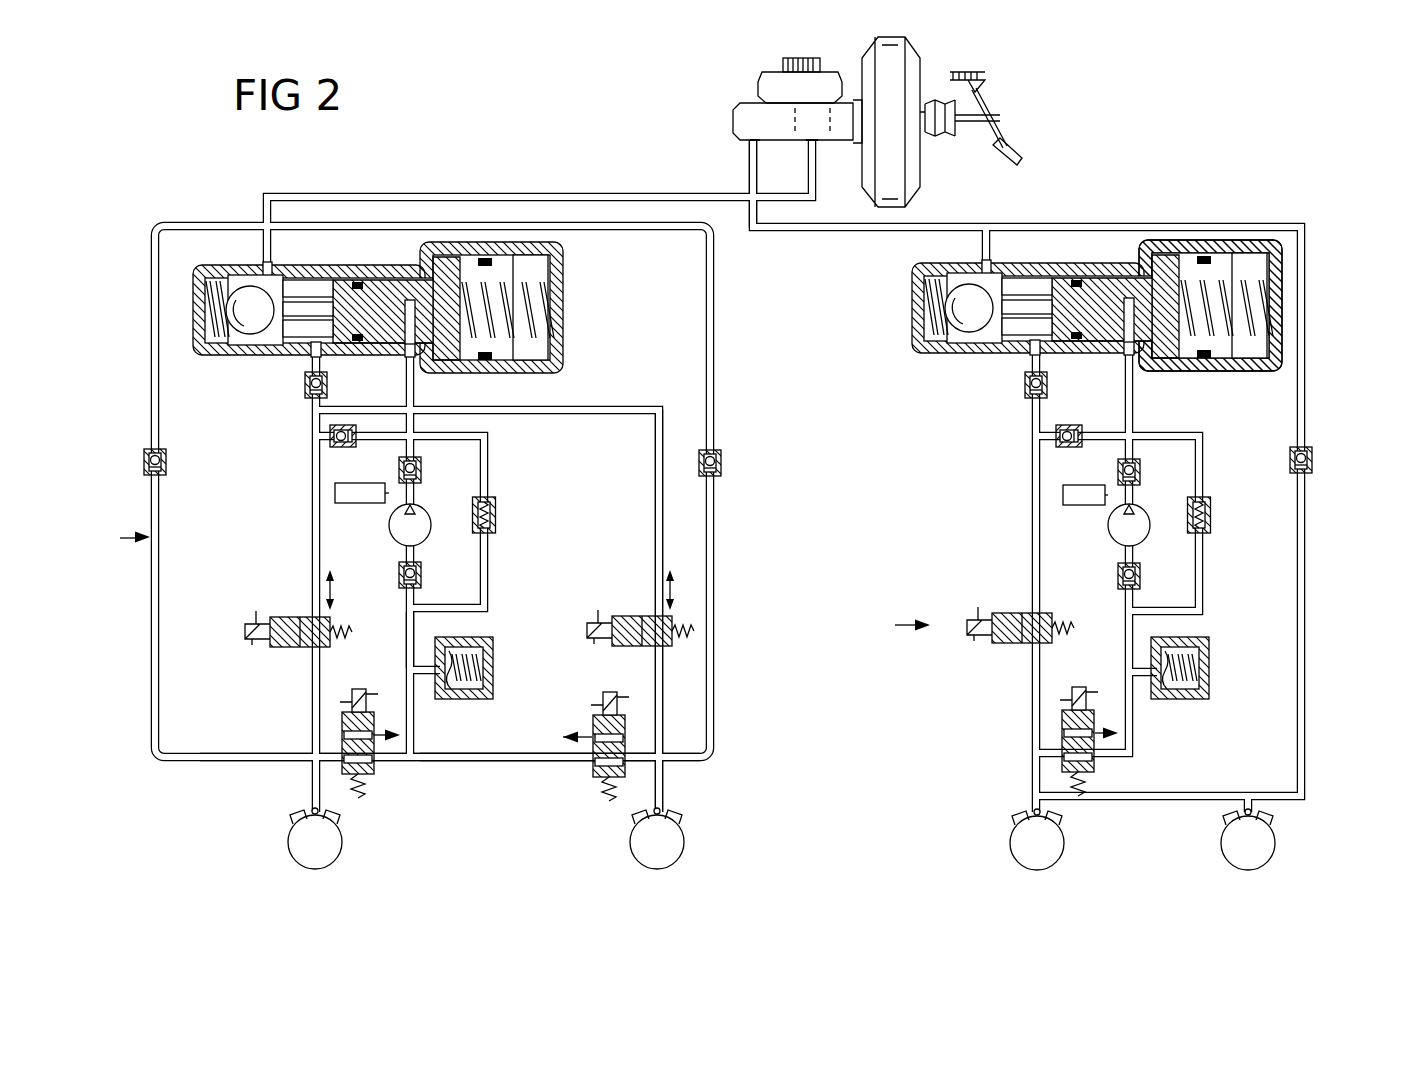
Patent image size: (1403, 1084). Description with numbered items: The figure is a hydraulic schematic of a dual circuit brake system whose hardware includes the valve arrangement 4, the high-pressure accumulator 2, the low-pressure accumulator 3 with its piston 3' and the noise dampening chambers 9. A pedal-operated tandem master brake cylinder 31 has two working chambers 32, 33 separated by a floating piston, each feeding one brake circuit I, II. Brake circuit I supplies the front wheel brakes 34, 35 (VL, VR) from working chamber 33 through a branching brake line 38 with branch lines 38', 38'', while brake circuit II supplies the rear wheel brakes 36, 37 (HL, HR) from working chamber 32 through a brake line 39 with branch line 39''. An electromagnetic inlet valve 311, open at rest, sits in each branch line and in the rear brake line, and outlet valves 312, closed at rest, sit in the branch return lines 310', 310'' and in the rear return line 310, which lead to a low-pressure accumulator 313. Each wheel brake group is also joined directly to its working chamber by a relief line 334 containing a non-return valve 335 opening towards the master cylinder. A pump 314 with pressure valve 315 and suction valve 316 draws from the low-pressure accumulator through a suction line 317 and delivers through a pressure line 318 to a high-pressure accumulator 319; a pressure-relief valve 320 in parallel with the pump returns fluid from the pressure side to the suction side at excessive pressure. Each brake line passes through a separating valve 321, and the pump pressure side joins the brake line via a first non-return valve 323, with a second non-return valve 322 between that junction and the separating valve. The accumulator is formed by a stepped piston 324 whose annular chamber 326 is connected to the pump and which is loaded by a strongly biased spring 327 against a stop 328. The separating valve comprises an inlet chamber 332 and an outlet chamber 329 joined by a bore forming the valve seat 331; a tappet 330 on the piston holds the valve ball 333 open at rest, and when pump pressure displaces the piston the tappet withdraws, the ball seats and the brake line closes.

The high-pressure accumulator 2 is at (572, 347).
The low-pressure accumulator 3 is at (495, 658).
The piston of the low-pressure accumulator 3' is at (494, 634).
The valve arrangement 4 is at (127, 533).
The noise dampening chamber 9 is at (335, 493).
The tandem master brake cylinder 31 is at (727, 95).
The working chamber 32 is at (767, 128).
The working chamber 33 is at (828, 128).
The front left wheel brake 34 is at (343, 840).
The front right wheel brake 35 is at (684, 840).
The rear left wheel brake 36 is at (1065, 840).
The rear right wheel brake 37 is at (1276, 840).
The brake line 38 is at (510, 202).
The branch line 38' is at (284, 578).
The branch line 38'' is at (622, 611).
The brake line 39 is at (1027, 468).
The branch line 39'' is at (1201, 821).
The brake circuit I is at (808, 186).
The brake circuit II is at (748, 183).
The return line 310 is at (455, 551).
The branch return line 310' is at (450, 774).
The branch return line 310'' is at (537, 741).
The inlet valve 311 is at (275, 648).
The outlet valve 312 is at (342, 735).
The low-pressure accumulator 313 is at (485, 672).
The pump 314 is at (389, 525).
The pressure valve 315 is at (424, 470).
The suction valve 316 is at (424, 575).
The suction line 317 is at (407, 625).
The pressure line 318 is at (345, 412).
The high-pressure accumulator 319 is at (580, 320).
The pressure-relief valve 320 is at (496, 515).
The separating valve 321 is at (225, 375).
The second non-return valve 322 is at (328, 386).
The first non-return valve 323 is at (345, 450).
The stepped piston 324 is at (480, 370).
The annular chamber 326 is at (388, 286).
The spring 327 is at (552, 290).
The stop 328 is at (357, 296).
The outlet chamber 329 is at (298, 340).
The tappet 330 is at (300, 290).
The valve seat 331 is at (272, 300).
The inlet chamber 332 is at (265, 350).
The valve ball 333 is at (247, 320).
The relief line 334 is at (160, 562).
The non-return valve 335 is at (168, 463).